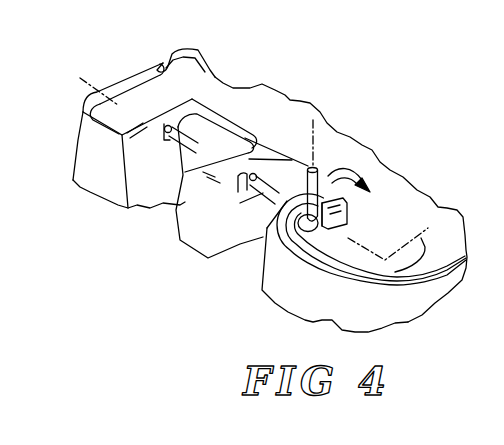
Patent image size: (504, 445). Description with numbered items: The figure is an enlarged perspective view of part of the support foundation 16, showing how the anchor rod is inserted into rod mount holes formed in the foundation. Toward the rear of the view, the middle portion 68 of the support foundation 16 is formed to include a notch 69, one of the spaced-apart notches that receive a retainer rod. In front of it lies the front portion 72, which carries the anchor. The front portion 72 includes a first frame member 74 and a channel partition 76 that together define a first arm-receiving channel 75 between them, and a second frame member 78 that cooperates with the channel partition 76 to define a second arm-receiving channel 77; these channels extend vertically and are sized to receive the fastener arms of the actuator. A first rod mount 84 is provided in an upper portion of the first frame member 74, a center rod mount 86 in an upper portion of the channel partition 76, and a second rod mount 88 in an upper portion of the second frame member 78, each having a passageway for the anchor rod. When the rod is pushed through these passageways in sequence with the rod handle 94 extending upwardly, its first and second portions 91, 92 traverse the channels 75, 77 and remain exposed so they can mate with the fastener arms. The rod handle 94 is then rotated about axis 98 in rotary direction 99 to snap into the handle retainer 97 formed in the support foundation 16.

The support foundation 16 is at (72, 139).
The middle portion 68 is at (299, 118).
The notch 69 is at (180, 72).
The front portion 72 is at (138, 223).
The first frame member 74 is at (102, 177).
The first arm-receiving channel 75 is at (160, 227).
The channel partition 76 is at (196, 245).
The second arm-receiving channel 77 is at (250, 267).
The second frame member 78 is at (280, 285).
The first rod mount 84 is at (148, 150).
The center rod mount 86 is at (236, 155).
The second rod mount 88 is at (240, 245).
The first portion of anchor rod 91 is at (198, 158).
The second portion of anchor rod 92 is at (268, 197).
The rod handle 94 is at (325, 170).
The handle retainer 97 is at (350, 237).
The axis 98 is at (436, 223).
The rotary direction 99 is at (360, 174).